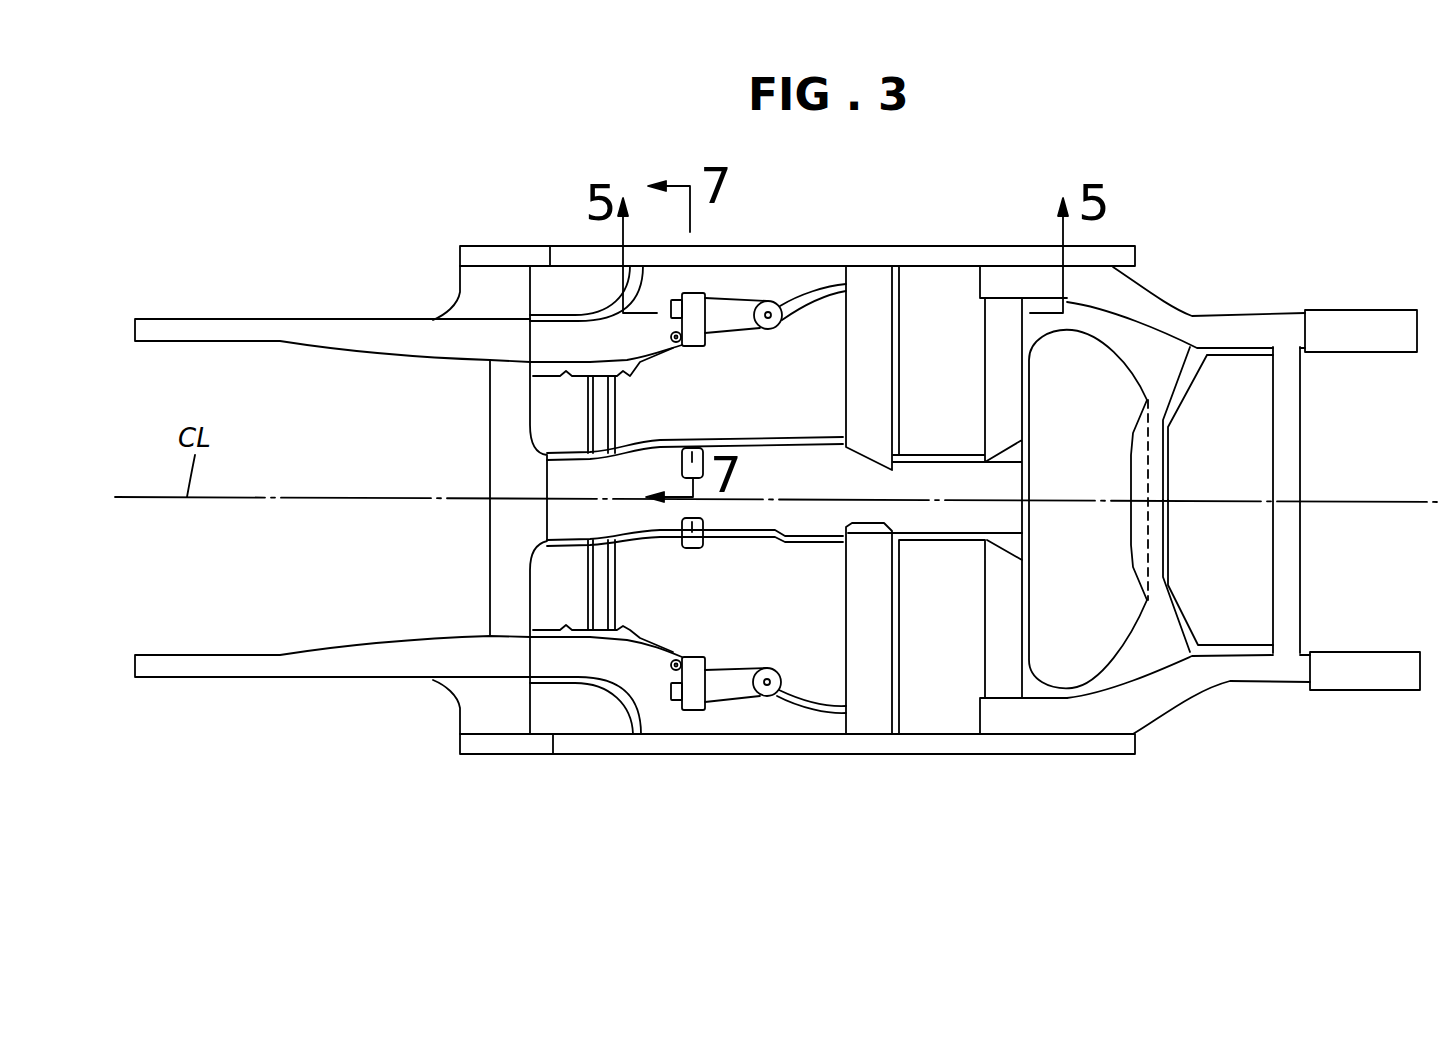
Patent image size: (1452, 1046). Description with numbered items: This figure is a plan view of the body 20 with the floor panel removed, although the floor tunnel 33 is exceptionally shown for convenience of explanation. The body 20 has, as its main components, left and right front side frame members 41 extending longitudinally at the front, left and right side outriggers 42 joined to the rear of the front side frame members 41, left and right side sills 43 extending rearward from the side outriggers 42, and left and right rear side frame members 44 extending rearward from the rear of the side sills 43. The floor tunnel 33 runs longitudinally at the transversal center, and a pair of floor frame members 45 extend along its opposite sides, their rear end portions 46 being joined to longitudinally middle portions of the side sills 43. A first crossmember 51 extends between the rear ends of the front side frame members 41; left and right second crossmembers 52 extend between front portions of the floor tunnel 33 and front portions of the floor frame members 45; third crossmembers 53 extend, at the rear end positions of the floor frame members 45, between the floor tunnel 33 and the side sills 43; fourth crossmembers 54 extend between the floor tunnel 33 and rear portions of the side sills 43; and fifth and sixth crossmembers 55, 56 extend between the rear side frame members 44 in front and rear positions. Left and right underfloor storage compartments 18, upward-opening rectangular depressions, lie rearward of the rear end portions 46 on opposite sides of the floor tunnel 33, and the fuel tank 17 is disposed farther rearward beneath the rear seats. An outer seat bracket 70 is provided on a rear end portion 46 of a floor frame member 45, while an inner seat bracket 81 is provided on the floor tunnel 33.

The body 20 is at (251, 206).
The front side frame member 41 is at (303, 330).
The side outrigger 42 is at (457, 292).
The side sill 43 is at (485, 250).
The rear side frame member 44 is at (1243, 325).
The floor frame member 45 is at (568, 330).
The rear end portion 46 is at (792, 273).
The fuel tank 17 is at (1110, 367).
The underfloor storage compartment 18 is at (936, 290).
The floor tunnel 33 is at (790, 522).
The first crossmember 51 is at (500, 462).
The second crossmember 52 is at (598, 400).
The third crossmember 53 is at (858, 358).
The fourth crossmember 54 is at (993, 362).
The fifth crossmember 55 is at (1170, 458).
The sixth crossmember 56 is at (1302, 458).
The outer seat bracket 70 is at (693, 293).
The inner seat bracket 81 is at (695, 448).